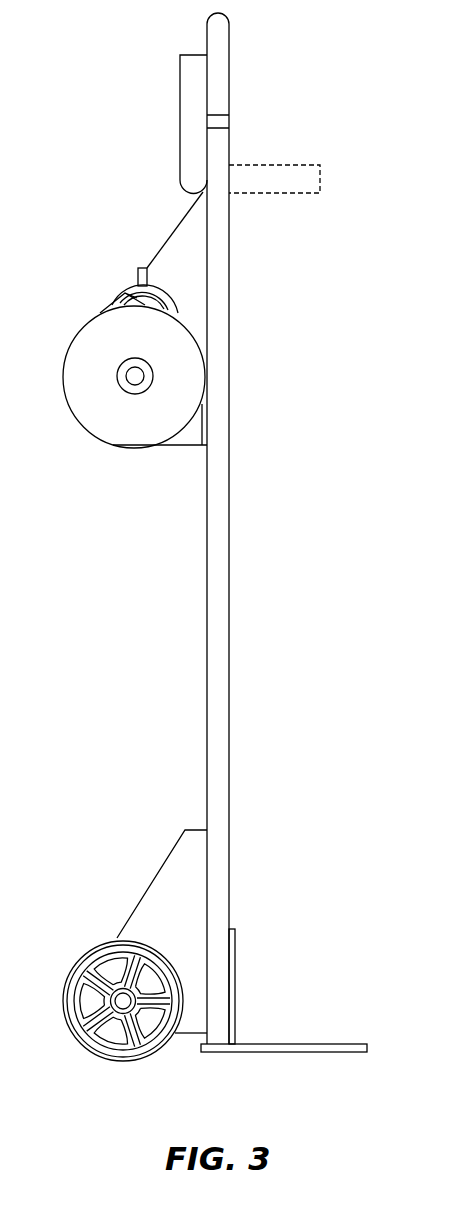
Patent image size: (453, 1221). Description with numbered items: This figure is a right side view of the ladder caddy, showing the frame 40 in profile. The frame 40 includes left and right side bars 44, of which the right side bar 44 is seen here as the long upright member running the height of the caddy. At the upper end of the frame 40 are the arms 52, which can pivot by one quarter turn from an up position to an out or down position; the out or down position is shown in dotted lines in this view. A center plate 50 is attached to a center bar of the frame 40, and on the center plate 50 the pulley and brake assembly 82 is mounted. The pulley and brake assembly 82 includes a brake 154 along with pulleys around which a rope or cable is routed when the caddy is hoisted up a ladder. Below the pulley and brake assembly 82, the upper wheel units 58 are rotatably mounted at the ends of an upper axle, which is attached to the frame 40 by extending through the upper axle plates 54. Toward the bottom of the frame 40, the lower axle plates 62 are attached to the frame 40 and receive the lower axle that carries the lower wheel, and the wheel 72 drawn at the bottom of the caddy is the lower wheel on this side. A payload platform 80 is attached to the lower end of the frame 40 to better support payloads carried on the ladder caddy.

The frame 40 is at (230, 641).
The side bars 44 is at (222, 697).
The center plate 50 is at (185, 250).
The arms 52 is at (180, 97).
The upper axle plates 54 is at (188, 433).
The upper wheel units 58 is at (93, 440).
The lower axle plates 62 is at (173, 880).
The wheel 72 is at (70, 1027).
The payload platform 80 is at (300, 1042).
The pulley and brake assembly 82 is at (133, 287).
The brake 154 is at (128, 297).